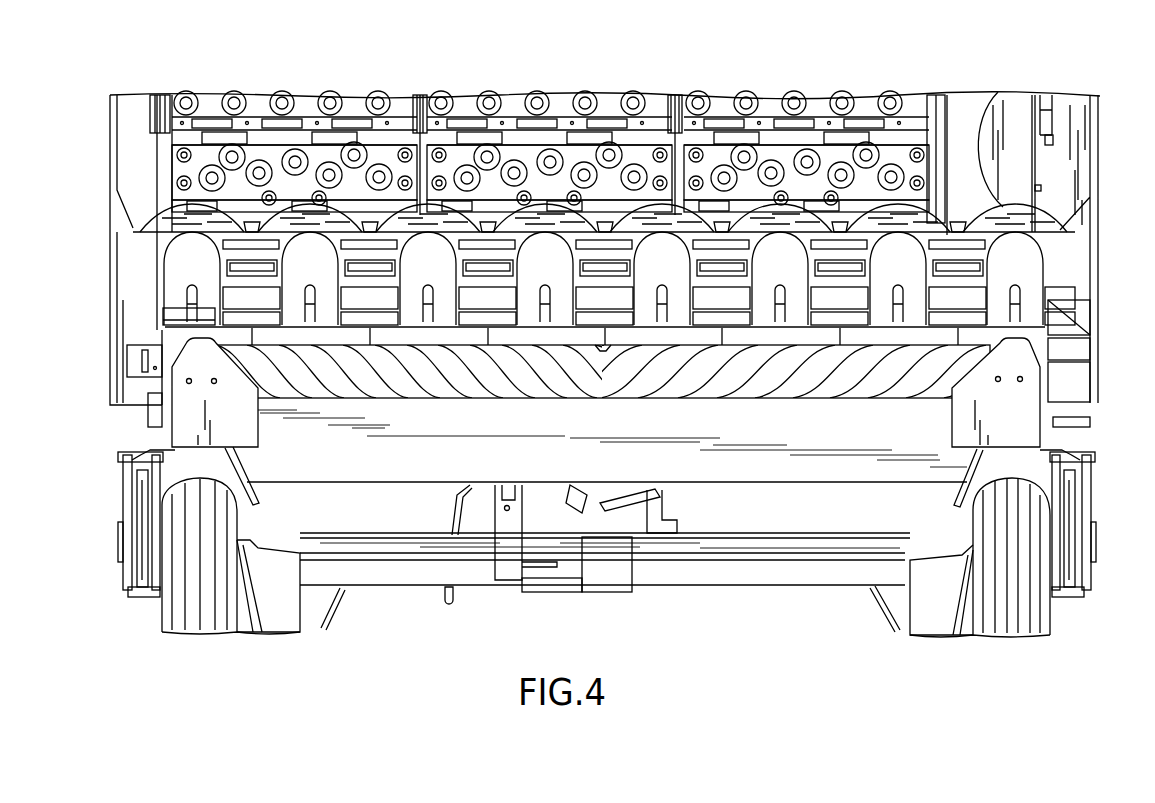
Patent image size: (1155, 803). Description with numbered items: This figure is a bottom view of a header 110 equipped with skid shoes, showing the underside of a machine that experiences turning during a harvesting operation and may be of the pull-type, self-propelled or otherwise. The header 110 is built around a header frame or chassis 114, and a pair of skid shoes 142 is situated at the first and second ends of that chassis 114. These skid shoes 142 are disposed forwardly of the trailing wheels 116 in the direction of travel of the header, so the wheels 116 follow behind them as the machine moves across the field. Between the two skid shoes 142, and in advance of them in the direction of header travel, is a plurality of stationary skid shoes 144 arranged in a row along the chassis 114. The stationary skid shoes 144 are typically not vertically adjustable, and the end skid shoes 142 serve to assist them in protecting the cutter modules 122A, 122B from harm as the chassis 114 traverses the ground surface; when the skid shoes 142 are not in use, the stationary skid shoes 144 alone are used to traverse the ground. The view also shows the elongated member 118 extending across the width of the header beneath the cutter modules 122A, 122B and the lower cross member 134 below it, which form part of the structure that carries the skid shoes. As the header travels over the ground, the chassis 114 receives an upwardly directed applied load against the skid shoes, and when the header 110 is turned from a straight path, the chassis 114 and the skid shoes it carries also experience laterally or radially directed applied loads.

The header 110 is at (1096, 78).
The header frame or chassis 114 is at (1098, 168).
The trailing wheels 116 is at (160, 613).
The auger 118 is at (847, 420).
The cutter module 122A is at (237, 207).
The cutter module 122B is at (330, 207).
The cross member 134 is at (750, 483).
The skid shoes 142 is at (172, 387).
The stationary skid shoes 144 is at (177, 268).